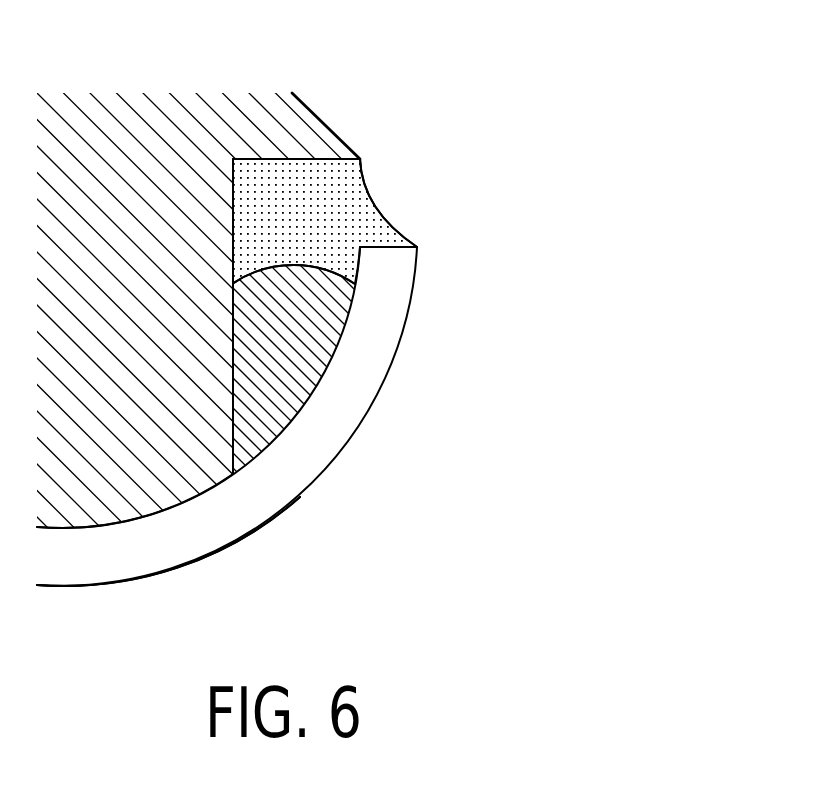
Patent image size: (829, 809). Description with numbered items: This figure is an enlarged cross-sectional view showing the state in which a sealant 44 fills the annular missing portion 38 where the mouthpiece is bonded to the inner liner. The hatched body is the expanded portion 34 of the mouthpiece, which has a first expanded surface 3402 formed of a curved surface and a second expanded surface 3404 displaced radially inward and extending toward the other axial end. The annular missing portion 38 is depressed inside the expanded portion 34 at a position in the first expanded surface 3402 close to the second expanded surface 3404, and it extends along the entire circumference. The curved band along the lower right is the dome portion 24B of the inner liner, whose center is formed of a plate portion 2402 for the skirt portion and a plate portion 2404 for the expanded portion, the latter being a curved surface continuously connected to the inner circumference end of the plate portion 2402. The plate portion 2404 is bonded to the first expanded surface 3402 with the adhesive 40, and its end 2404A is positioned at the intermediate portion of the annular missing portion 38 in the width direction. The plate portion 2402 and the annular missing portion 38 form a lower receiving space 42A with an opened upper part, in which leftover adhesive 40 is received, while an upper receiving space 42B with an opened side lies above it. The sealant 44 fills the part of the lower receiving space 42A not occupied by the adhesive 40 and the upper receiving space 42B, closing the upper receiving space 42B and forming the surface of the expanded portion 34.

The expanded portion 34 is at (135, 232).
The annular missing portion 38 is at (233, 220).
The second expanded surface 3404 is at (313, 110).
The first expanded surface 3402 is at (165, 503).
The adhesive 40 is at (298, 265).
The lower receiving space 42A is at (280, 355).
The upper receiving space 42B is at (297, 203).
The sealant 44 is at (377, 193).
The plate portion for expanded portion 2404 is at (393, 377).
The end of plate portion for expanded portion 2404A is at (397, 245).
The plate portion for skirt portion 2402 is at (138, 572).
The dome portion 24B is at (168, 566).